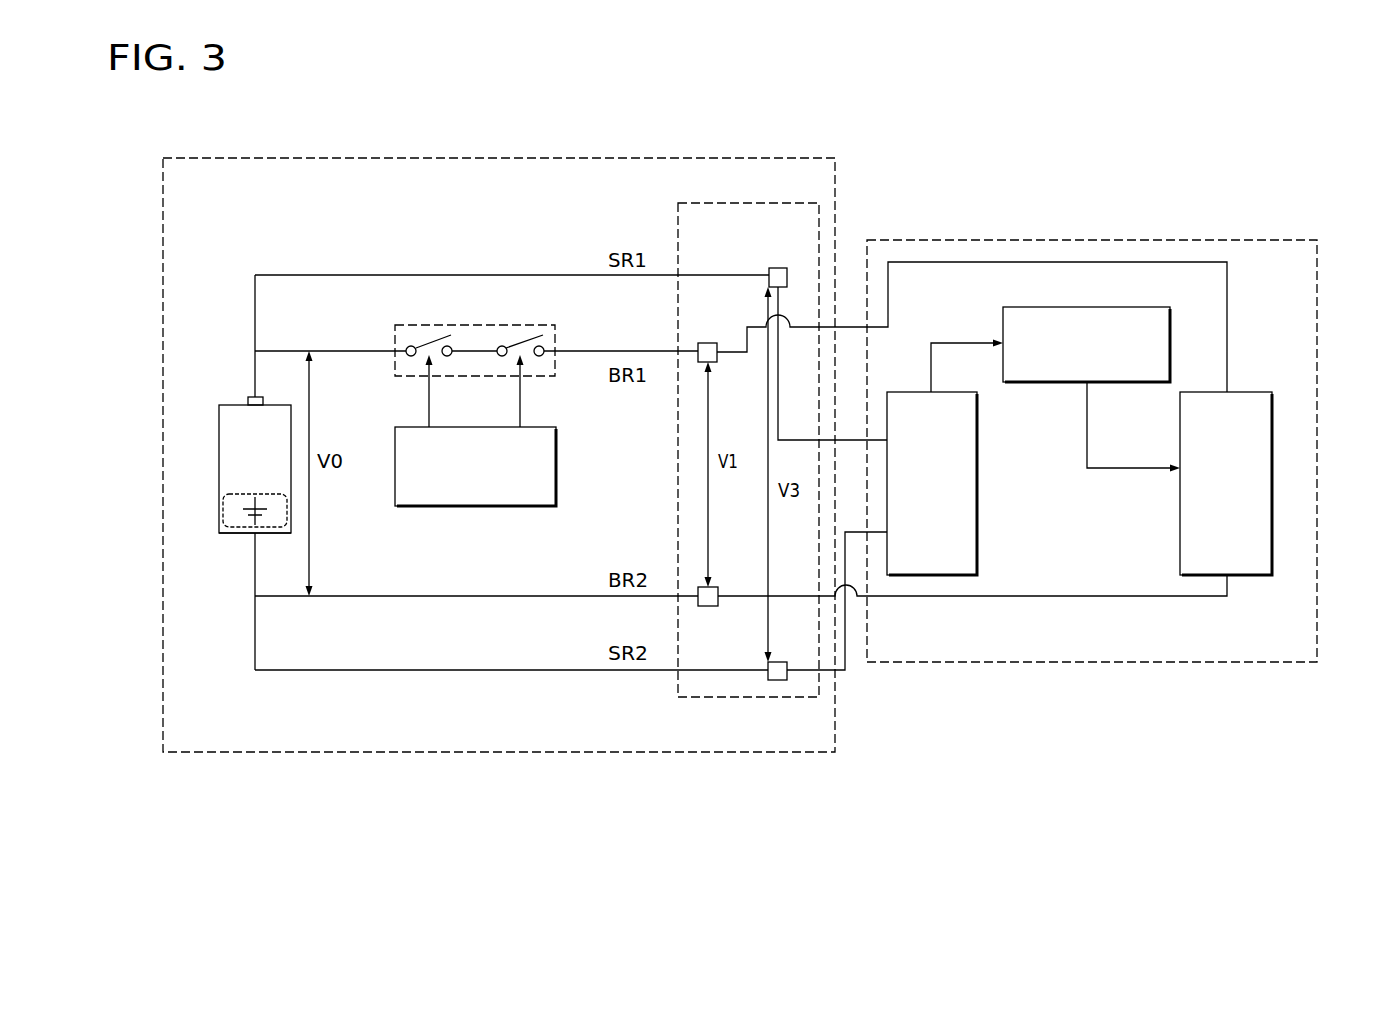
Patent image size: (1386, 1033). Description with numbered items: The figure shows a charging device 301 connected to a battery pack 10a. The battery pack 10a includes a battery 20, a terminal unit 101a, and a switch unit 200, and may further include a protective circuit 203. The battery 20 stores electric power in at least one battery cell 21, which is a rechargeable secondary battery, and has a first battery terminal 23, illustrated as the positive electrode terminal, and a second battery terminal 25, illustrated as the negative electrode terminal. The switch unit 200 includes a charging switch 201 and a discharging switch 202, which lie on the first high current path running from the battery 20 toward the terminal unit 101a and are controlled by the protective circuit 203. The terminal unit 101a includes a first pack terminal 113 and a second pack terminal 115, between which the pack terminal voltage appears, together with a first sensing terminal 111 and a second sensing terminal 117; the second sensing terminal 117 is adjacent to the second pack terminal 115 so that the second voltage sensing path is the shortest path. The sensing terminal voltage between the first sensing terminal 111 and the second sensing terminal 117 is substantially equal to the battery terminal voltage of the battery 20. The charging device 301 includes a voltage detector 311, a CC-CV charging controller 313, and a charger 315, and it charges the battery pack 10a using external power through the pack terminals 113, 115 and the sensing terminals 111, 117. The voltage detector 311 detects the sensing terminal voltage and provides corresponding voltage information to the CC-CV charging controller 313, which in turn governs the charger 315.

The battery pack 10a is at (846, 149).
The battery 20 is at (219, 460).
The battery cell 21 is at (223, 507).
The first battery terminal 23 is at (246, 401).
The second battery terminal 25 is at (229, 533).
The switch unit 200 is at (557, 328).
The charging switch 201 is at (426, 335).
The discharging switch 202 is at (516, 335).
The protective circuit 203 is at (533, 427).
The terminal unit 101a is at (750, 203).
The first sensing terminal 111 is at (777, 267).
The first pack terminal 113 is at (708, 342).
The second pack terminal 115 is at (708, 606).
The second sensing terminal 117 is at (778, 680).
The charging device 301 is at (1287, 225).
The voltage detector 311 is at (937, 391).
The CC-CV charging controller 313 is at (1090, 306).
The charger 315 is at (1240, 391).